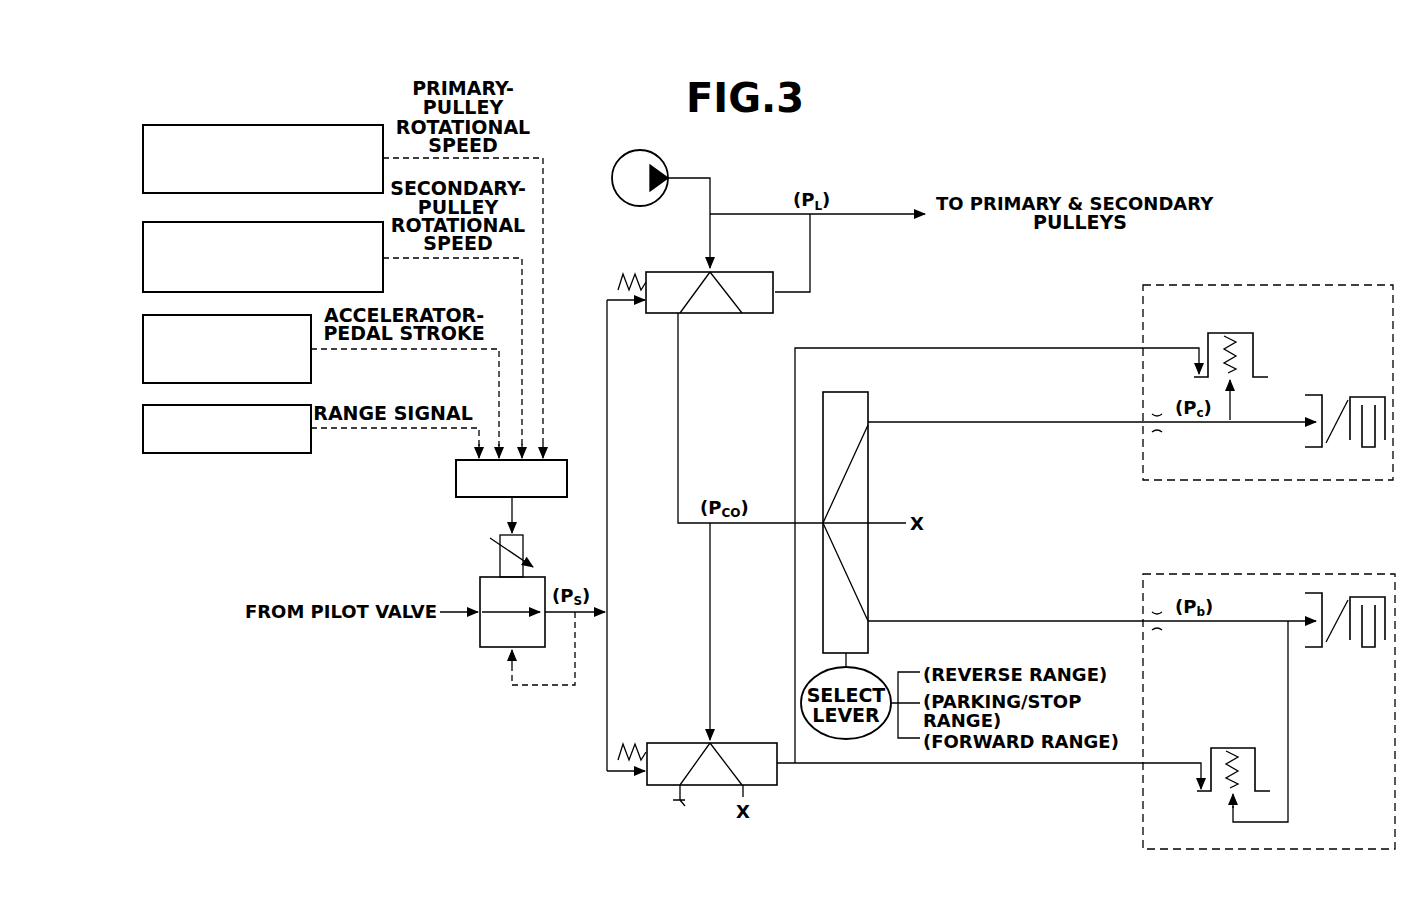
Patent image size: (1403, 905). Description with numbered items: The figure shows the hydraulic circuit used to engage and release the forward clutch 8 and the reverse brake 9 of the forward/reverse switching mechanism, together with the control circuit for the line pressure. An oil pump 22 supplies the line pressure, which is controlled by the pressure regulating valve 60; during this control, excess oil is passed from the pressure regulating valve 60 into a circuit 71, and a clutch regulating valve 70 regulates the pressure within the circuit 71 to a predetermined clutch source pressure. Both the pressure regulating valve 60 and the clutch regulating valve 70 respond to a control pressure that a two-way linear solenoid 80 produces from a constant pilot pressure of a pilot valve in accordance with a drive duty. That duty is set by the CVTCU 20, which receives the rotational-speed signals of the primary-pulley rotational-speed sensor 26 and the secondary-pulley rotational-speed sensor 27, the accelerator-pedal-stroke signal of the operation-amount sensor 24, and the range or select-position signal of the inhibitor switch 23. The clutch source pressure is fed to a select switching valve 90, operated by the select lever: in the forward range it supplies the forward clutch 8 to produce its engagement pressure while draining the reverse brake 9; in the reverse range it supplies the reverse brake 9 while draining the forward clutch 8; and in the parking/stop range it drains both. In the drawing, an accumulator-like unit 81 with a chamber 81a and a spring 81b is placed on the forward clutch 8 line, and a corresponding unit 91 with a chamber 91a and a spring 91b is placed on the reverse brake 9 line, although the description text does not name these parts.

The primary-pulley rotational-speed sensor 26 is at (158, 124).
The secondary-pulley rotational-speed sensor 27 is at (158, 221).
The operation-amount sensor 24 is at (156, 314).
The inhibitor switch 23 is at (156, 404).
The CVTCU 20 is at (456, 478).
The oil pump 22 is at (636, 152).
The pressure regulating valve 60 is at (676, 270).
The circuit 71 is at (682, 410).
The 2-way linear solenoid 80 is at (480, 634).
The clutch regulating valve 70 is at (748, 740).
The select switching valve 90 is at (870, 480).
The forward clutch 8 is at (1342, 390).
The accumulator (forward clutch) 81 is at (1246, 356).
The accumulator piston chamber 81a is at (1255, 367).
The accumulator spring 81b is at (1212, 337).
The reverse brake 9 is at (1342, 652).
The accumulator (reverse brake) 91 is at (1211, 730).
The accumulator piston chamber 91a is at (1210, 750).
The accumulator spring 91b is at (1243, 755).